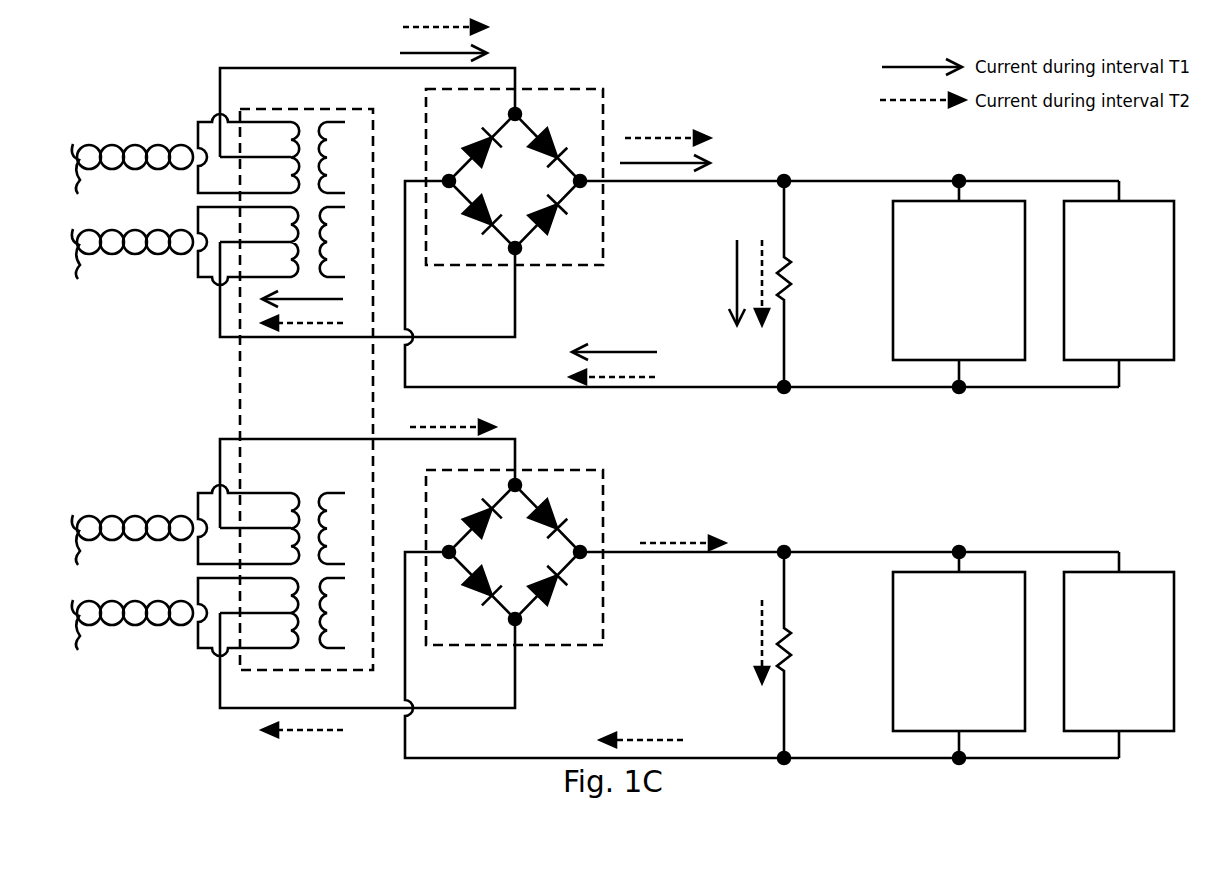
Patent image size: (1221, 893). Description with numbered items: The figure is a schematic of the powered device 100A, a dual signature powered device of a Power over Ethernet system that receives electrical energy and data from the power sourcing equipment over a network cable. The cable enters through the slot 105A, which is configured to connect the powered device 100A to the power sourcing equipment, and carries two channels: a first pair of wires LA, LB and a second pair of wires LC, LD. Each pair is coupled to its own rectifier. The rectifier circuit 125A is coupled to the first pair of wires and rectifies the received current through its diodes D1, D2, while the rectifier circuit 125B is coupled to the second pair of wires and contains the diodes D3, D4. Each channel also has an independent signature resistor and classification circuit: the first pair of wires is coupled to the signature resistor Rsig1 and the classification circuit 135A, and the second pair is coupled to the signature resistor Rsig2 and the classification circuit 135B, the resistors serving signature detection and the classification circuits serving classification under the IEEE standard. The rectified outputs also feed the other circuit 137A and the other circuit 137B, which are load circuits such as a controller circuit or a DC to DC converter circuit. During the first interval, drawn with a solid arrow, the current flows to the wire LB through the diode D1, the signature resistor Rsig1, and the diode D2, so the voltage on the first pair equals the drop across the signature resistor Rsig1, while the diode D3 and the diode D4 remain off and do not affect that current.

The powered device 100A is at (196, 113).
The slot 105A is at (240, 386).
The rectifier circuit 125A is at (562, 181).
The rectifier circuit 125B is at (562, 559).
The classification circuit 135A is at (959, 280).
The classification circuit 135B is at (959, 651).
The other circuit 137A is at (1119, 280).
The other circuit 137B is at (1119, 651).
The diode D1 is at (549, 128).
The diode D2 is at (468, 218).
The diode D3 is at (552, 487).
The diode D4 is at (474, 623).
The signature resistor Rsig1 is at (814, 284).
The signature resistor Rsig2 is at (814, 655).
The wire LA is at (128, 180).
The wire LB is at (128, 262).
The wire LC is at (128, 548).
The wire LD is at (128, 633).